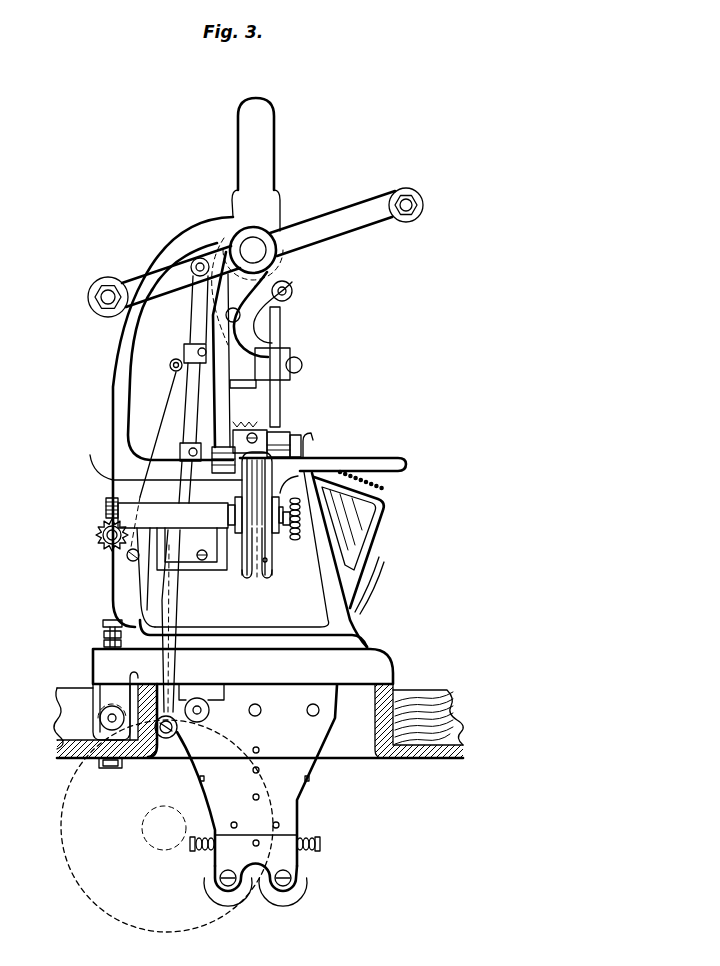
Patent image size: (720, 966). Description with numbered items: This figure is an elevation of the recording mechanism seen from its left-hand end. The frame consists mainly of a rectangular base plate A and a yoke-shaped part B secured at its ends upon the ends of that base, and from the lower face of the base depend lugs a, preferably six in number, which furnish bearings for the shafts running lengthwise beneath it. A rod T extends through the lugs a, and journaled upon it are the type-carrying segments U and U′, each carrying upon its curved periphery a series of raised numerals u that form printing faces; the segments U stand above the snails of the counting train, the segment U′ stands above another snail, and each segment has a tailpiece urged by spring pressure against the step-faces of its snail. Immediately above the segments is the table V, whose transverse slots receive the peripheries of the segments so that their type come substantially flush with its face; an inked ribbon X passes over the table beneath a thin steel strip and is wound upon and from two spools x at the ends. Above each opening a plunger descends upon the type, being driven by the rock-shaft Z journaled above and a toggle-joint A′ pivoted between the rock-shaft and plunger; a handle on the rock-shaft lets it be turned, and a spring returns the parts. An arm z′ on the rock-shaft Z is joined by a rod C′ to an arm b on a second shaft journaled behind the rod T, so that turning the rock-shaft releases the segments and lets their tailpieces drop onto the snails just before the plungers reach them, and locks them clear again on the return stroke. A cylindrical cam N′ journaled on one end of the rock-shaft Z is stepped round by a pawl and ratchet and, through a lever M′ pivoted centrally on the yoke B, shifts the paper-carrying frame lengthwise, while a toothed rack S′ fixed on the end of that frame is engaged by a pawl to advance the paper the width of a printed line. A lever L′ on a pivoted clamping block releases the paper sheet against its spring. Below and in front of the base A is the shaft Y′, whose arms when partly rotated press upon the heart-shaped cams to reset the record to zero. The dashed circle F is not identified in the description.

The rock-shaft Z is at (278, 258).
The arm z′ is at (140, 278).
The yoke-shaped part B is at (114, 390).
The toggle-joint A′ is at (292, 292).
The cylindrical cam N′ is at (265, 322).
The lever M′ is at (278, 396).
The toothed rack S′ is at (243, 426).
The lever L′ is at (308, 432).
The table V is at (385, 460).
The numerals u is at (386, 494).
The segment U′ is at (378, 518).
The segments U is at (350, 524).
The inked ribbon X is at (255, 528).
The spools x is at (268, 560).
The rod C′ is at (191, 330).
The rectangular plate A is at (388, 665).
The arm b is at (180, 727).
The lugs a is at (218, 805).
The shaft Y′ is at (312, 716).
The rod T is at (261, 710).
The wheel F is at (62, 822).